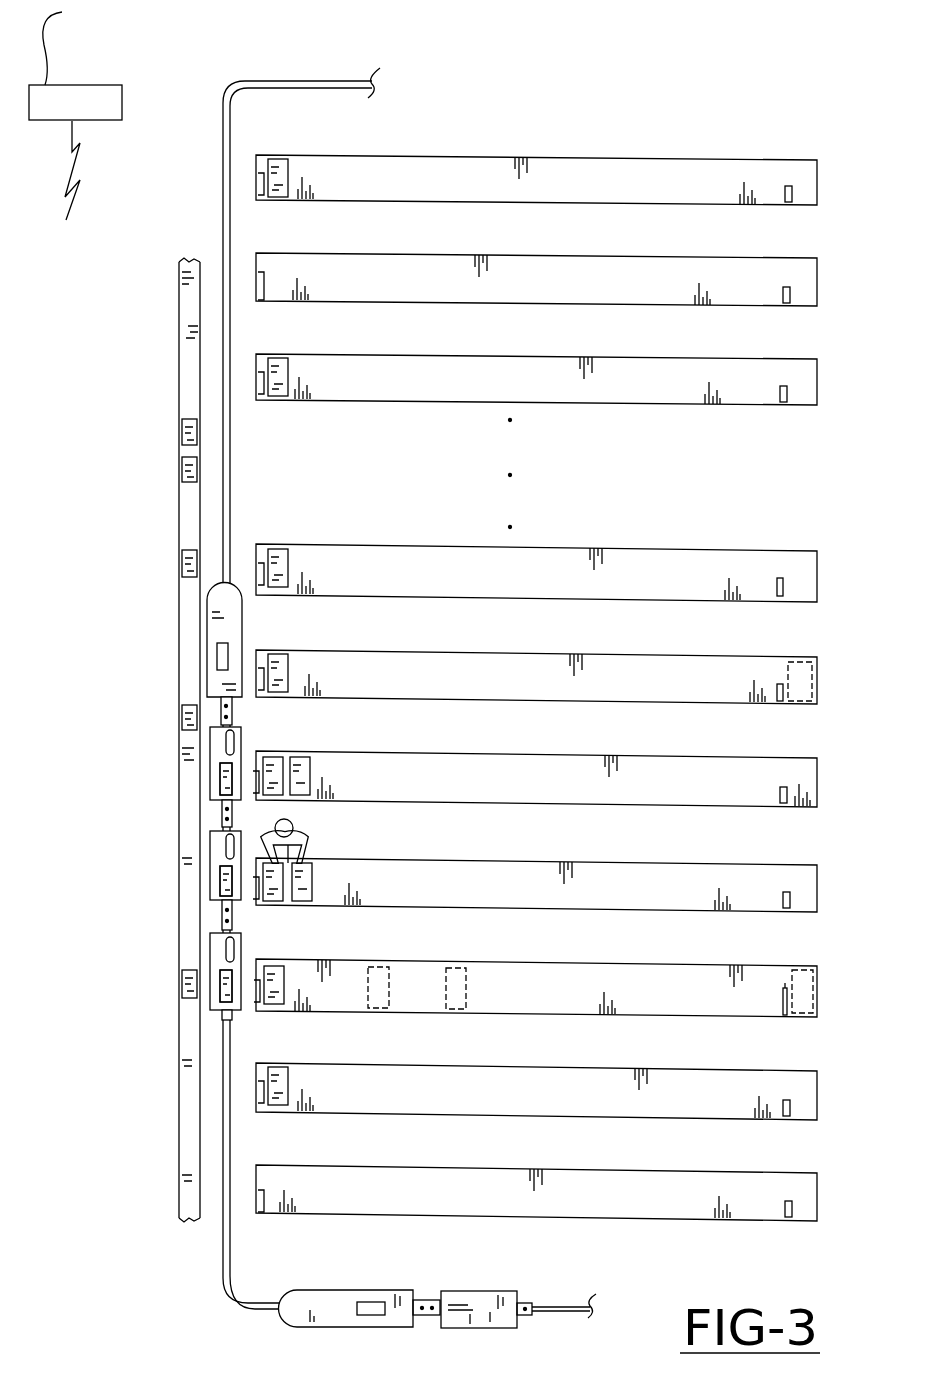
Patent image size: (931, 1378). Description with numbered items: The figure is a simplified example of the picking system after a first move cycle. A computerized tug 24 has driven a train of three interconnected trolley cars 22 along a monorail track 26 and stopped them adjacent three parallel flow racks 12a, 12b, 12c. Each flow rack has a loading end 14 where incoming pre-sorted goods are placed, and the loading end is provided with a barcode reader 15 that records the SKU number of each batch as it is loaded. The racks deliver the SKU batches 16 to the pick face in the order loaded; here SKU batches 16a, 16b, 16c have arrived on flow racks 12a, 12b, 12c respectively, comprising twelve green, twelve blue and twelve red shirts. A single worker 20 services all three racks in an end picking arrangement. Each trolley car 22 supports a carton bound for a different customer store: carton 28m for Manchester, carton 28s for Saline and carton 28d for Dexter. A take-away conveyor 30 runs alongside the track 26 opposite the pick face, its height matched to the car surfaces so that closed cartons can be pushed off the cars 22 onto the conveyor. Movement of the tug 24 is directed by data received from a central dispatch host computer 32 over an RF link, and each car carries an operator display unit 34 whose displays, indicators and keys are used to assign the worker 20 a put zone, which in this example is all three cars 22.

The flow rack 12a is at (690, 765).
The flow rack 12b is at (678, 870).
The flow rack 12c is at (658, 975).
The loading end 14 is at (818, 1005).
The barcode reader 15 is at (785, 1000).
The SKU batch 16 is at (272, 402).
The SKU batch 16a is at (275, 760).
The SKU batch 16b is at (275, 900).
The SKU batch 16c is at (272, 1008).
The worker 20 is at (310, 838).
The trolley car 22 is at (220, 745).
The tug 24 is at (226, 630).
The monorail track 26 is at (226, 1276).
The carton 28m is at (220, 785).
The carton 28s is at (225, 885).
The carton 28d is at (225, 982).
The take-away conveyor 30 is at (180, 532).
The central dispatch host computer 32 is at (118, 100).
The operator display unit 34 is at (240, 740).